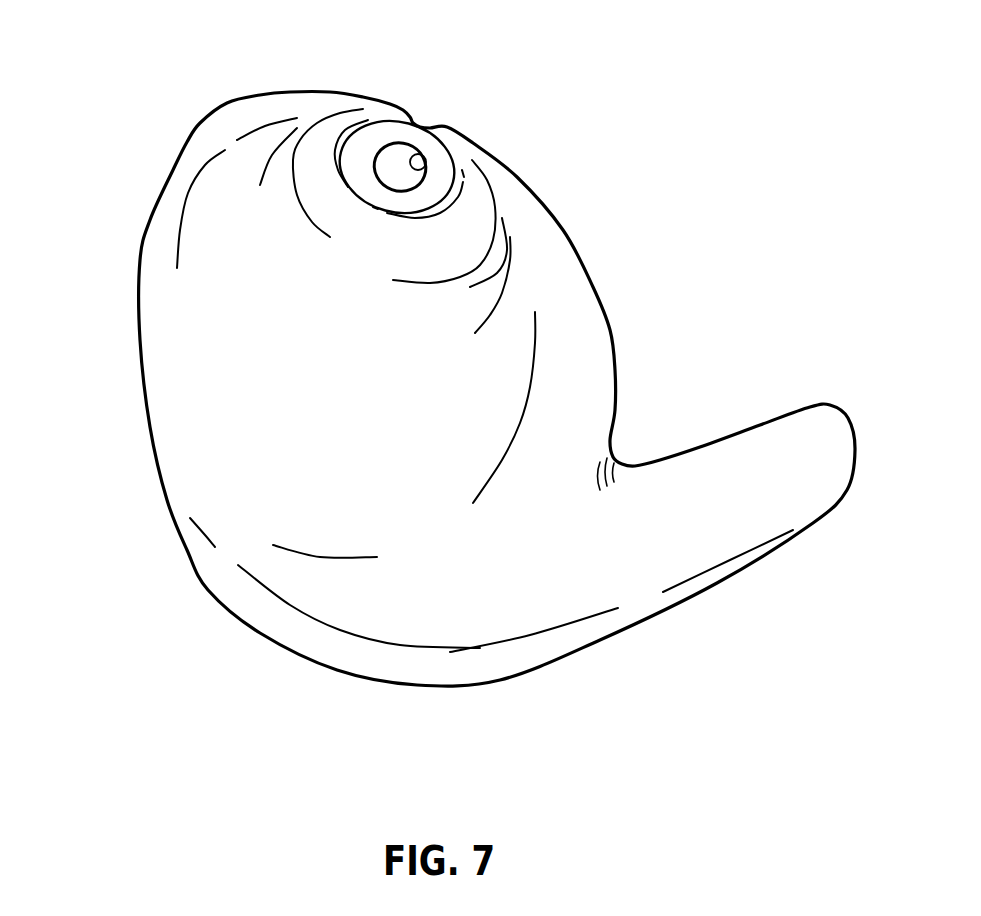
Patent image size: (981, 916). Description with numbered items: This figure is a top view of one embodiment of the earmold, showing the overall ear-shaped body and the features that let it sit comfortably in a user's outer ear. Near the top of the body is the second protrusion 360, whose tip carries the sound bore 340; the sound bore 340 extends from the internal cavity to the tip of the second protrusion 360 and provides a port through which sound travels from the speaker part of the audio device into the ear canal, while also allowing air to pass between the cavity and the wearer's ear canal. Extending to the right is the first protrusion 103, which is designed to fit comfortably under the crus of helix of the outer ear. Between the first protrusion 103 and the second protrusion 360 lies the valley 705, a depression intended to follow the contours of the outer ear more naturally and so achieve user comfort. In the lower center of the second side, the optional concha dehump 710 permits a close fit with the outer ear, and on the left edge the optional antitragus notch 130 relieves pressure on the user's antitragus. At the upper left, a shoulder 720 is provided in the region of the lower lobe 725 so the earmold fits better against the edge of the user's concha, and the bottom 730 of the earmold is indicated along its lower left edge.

The first protrusion 103 is at (810, 507).
The antitragus notch 130 is at (150, 427).
The sound bore 340 is at (427, 170).
The second protrusion 360 is at (462, 178).
The valley 705 is at (641, 439).
The concha dehump 710 is at (410, 601).
The shoulder 720 is at (193, 138).
The lower lobe 725 is at (226, 105).
The bottom 730 is at (208, 590).